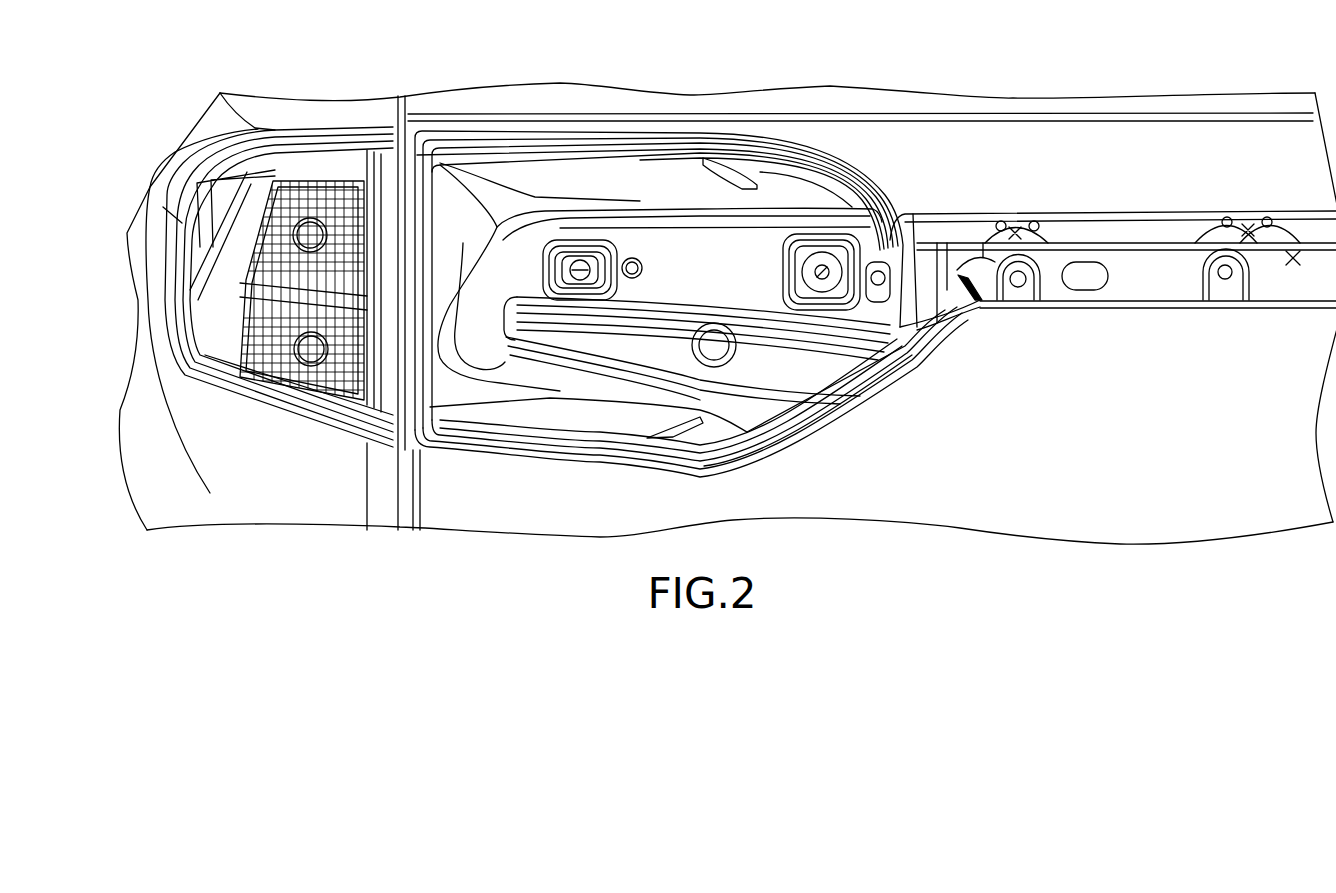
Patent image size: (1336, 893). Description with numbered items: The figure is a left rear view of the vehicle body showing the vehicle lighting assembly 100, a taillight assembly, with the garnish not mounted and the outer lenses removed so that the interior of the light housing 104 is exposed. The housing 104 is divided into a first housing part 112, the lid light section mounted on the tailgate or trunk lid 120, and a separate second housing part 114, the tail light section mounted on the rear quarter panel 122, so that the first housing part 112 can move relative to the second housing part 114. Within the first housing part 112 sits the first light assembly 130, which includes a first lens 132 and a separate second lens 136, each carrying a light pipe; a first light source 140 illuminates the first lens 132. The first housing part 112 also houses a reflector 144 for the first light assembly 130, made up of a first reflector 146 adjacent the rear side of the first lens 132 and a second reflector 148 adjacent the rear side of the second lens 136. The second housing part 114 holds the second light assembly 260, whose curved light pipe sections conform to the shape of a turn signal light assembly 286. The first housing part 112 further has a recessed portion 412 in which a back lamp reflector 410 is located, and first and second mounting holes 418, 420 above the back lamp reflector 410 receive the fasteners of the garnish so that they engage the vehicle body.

The vehicle lighting assembly 100 is at (928, 143).
The light housing 104 is at (411, 100).
The first housing part 112 is at (458, 397).
The second housing part 114 is at (220, 93).
The tailgate or trunk lid 120 is at (977, 488).
The rear quarter panel 122 is at (160, 466).
The first light assembly 130 is at (848, 437).
The first lens 132 is at (698, 178).
The second lens 136 is at (630, 427).
The first light source 140 is at (850, 353).
The reflector 144 is at (458, 198).
The first reflector 146 is at (805, 205).
The second reflector 148 is at (750, 413).
The second light assembly 260 is at (242, 456).
The turn signal light assembly 286 is at (339, 402).
The back lamp reflector 410 is at (812, 367).
The recessed portion 412 is at (757, 243).
The first mounting hole 418 is at (595, 266).
The second mounting hole 420 is at (850, 258).